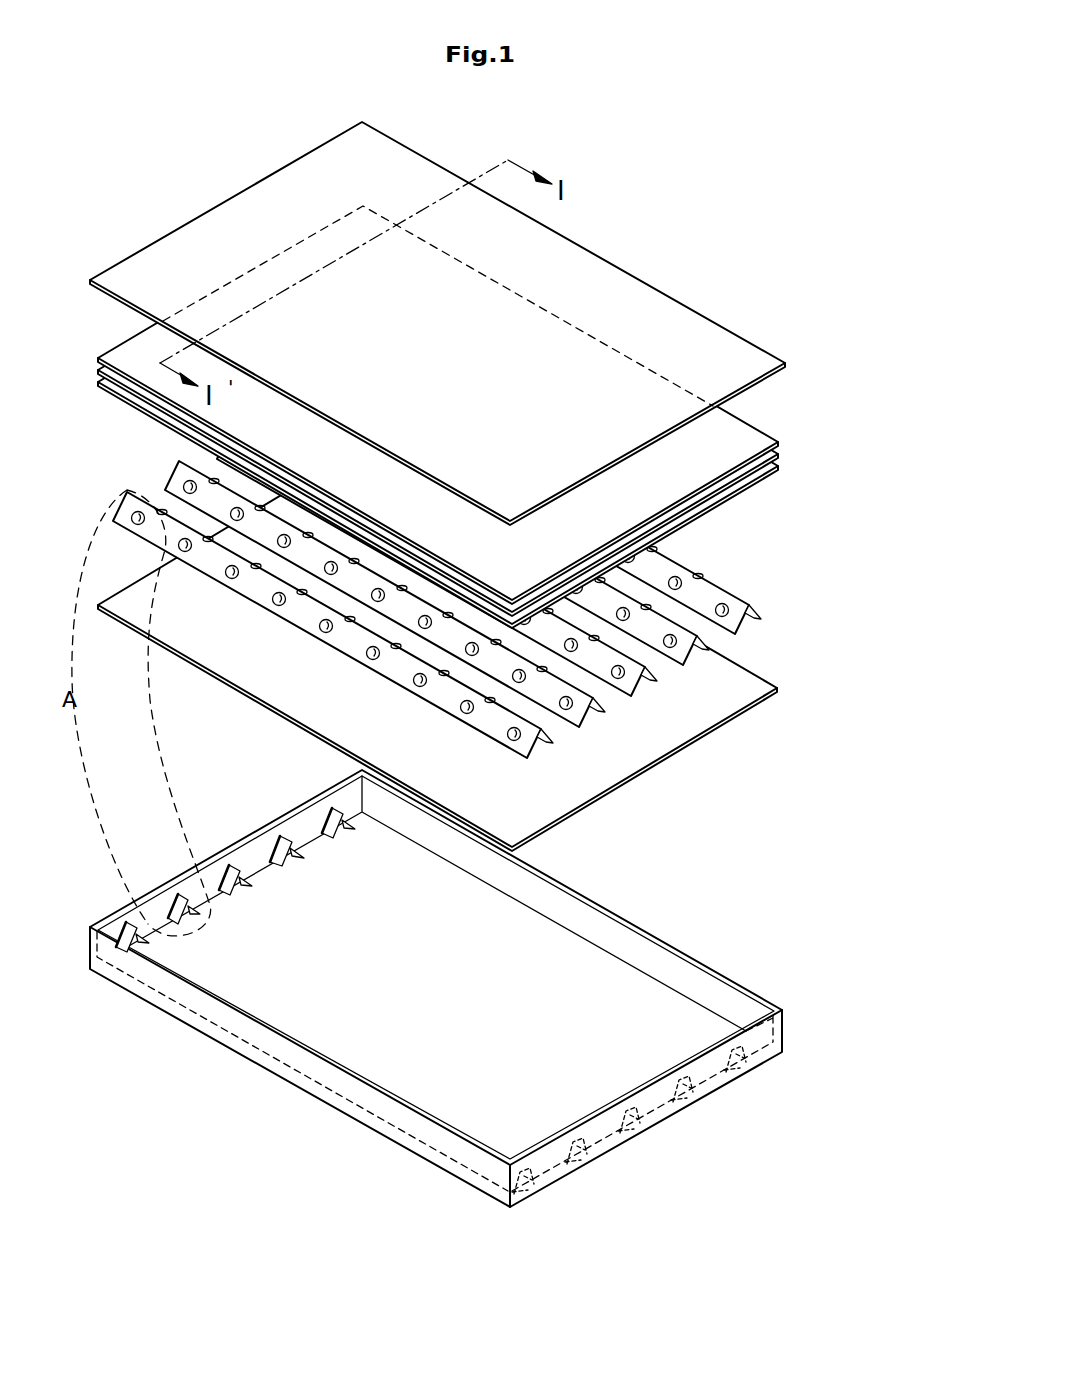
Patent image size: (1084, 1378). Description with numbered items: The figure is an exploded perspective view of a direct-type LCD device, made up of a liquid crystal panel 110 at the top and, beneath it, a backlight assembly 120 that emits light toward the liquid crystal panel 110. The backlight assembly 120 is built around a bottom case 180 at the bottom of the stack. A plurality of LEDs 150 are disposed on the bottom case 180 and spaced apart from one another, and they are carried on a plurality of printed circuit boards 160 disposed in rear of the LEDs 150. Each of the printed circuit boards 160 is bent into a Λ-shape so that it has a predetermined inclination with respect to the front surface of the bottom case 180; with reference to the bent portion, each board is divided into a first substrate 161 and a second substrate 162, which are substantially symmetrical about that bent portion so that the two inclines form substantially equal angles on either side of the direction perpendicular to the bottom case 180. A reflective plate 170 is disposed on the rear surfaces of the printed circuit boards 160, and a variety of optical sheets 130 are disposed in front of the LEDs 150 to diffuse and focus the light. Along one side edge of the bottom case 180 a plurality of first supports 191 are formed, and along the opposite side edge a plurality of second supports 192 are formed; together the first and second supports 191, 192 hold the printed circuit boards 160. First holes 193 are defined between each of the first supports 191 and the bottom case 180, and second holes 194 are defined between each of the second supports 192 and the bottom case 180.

The liquid crystal panel 110 is at (785, 363).
The backlight assembly 120 is at (515, 703).
The optical sheets 130 is at (462, 414).
The LEDs 150 is at (716, 604).
The printed circuit boards 160 is at (497, 563).
The first substrate 161 is at (742, 634).
The second substrate 162 is at (763, 621).
The reflective plate 170 is at (768, 698).
The bottom case 180 is at (454, 982).
The first supports 191 is at (283, 853).
The second supports 192 is at (712, 1040).
The first holes 193 is at (303, 866).
The second holes 194 is at (760, 1066).